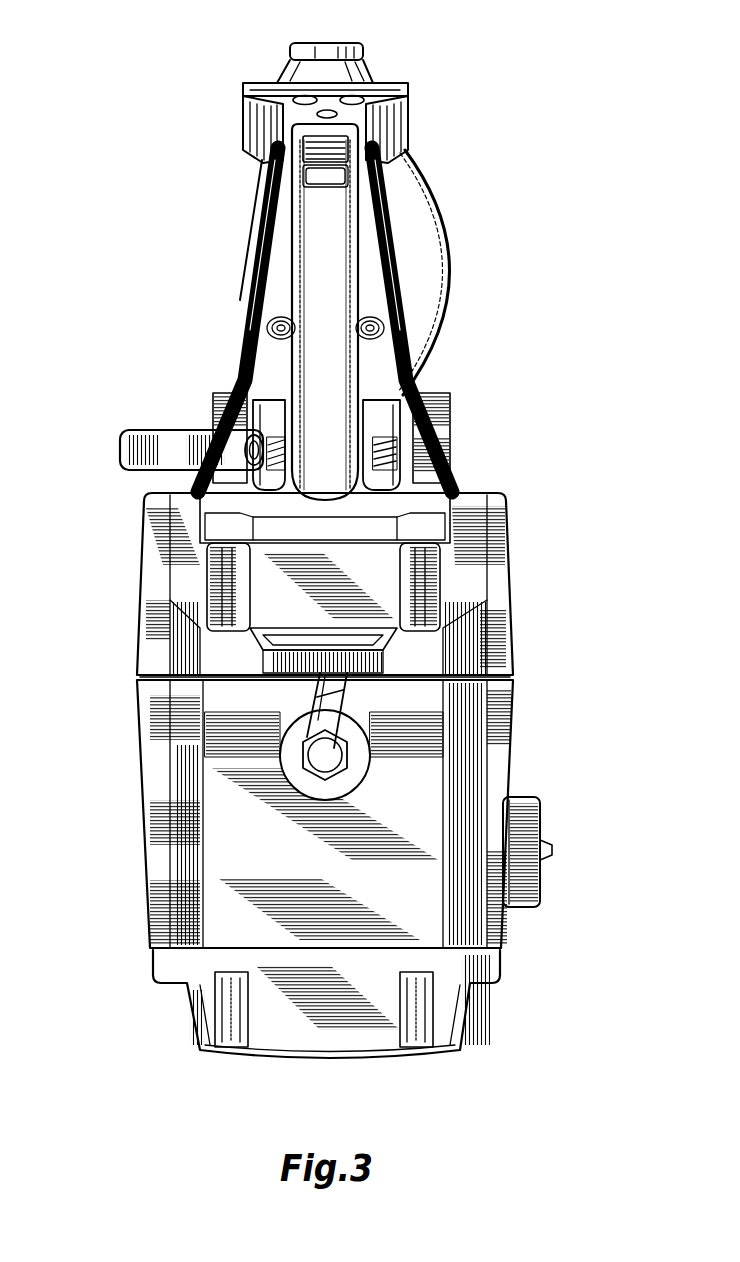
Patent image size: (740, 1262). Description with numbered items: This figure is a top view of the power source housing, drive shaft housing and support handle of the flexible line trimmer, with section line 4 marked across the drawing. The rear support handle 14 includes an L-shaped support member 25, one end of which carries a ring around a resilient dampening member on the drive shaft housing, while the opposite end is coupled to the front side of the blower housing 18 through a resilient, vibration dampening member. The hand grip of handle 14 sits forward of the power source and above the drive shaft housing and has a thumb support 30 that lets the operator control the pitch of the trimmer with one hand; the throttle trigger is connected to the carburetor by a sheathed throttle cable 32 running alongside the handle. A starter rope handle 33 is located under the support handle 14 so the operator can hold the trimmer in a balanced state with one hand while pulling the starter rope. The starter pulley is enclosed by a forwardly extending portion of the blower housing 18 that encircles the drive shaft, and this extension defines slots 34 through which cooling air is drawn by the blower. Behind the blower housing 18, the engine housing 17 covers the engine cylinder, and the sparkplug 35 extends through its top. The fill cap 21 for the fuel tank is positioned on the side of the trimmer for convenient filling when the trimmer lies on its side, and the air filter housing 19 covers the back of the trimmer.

The section line 4- 4 is at (345, 17).
The rear support handle 14 is at (232, 126).
The engine housing 17 is at (148, 781).
The blower housing 18 is at (160, 570).
The air filter housing 19 is at (192, 1020).
The fill cap 21 is at (552, 870).
The L-shaped support member 25 is at (292, 268).
The thumb support 30 is at (383, 178).
The sheathed throttle cable 32 is at (452, 262).
The starter rope handle 33 is at (120, 452).
The slots 34 is at (265, 357).
The sparkplug 35 is at (377, 760).